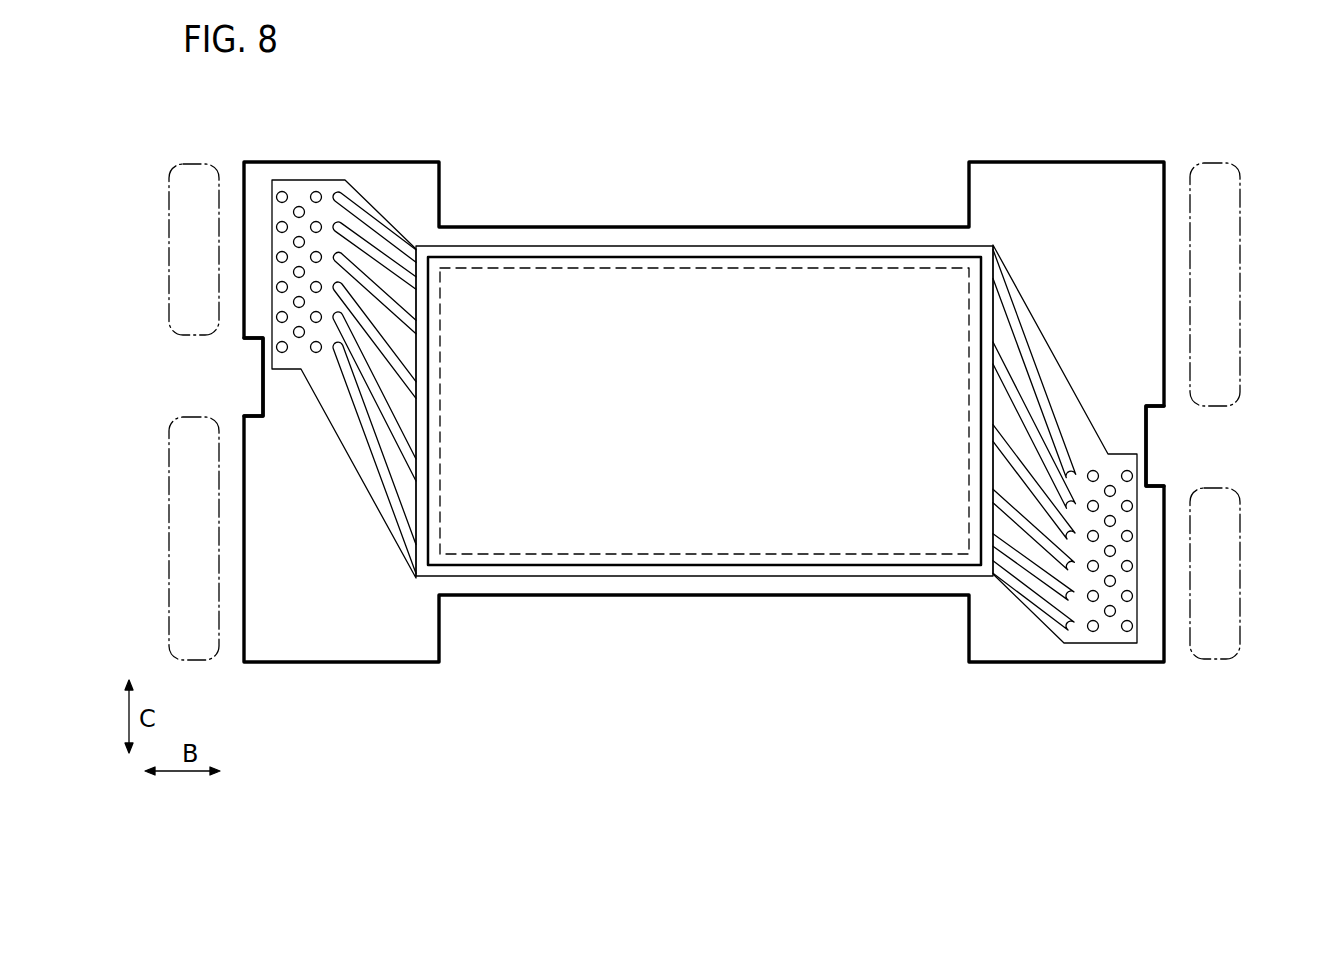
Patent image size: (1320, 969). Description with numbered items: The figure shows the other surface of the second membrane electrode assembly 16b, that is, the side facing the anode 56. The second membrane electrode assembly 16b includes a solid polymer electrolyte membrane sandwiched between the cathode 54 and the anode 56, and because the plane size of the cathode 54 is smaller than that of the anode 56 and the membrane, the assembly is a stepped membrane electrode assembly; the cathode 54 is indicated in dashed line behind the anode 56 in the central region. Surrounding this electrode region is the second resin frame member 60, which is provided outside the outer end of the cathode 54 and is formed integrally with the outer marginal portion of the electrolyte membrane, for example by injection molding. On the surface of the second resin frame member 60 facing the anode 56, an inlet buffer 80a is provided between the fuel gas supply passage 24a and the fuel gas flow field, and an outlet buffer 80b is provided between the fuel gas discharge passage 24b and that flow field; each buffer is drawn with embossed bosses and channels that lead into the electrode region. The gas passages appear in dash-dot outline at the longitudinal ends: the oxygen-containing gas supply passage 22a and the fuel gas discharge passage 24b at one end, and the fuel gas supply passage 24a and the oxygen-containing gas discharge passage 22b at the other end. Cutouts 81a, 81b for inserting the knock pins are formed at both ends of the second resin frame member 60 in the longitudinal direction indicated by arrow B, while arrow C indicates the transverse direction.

The second membrane electrode assembly 16b is at (356, 89).
The second resin frame member 60 is at (988, 161).
The anode 56 is at (536, 288).
The cathode 54 is at (610, 290).
The inlet buffer 80a is at (381, 193).
The outlet buffer 80b is at (1031, 631).
The cutout 81a is at (1148, 446).
The cutout 81b is at (262, 391).
The oxygen-containing gas supply passage 22a is at (1222, 270).
The oxygen-containing gas discharge passage 22b is at (185, 597).
The fuel gas supply passage 24a is at (185, 268).
The fuel gas discharge passage 24b is at (1222, 598).